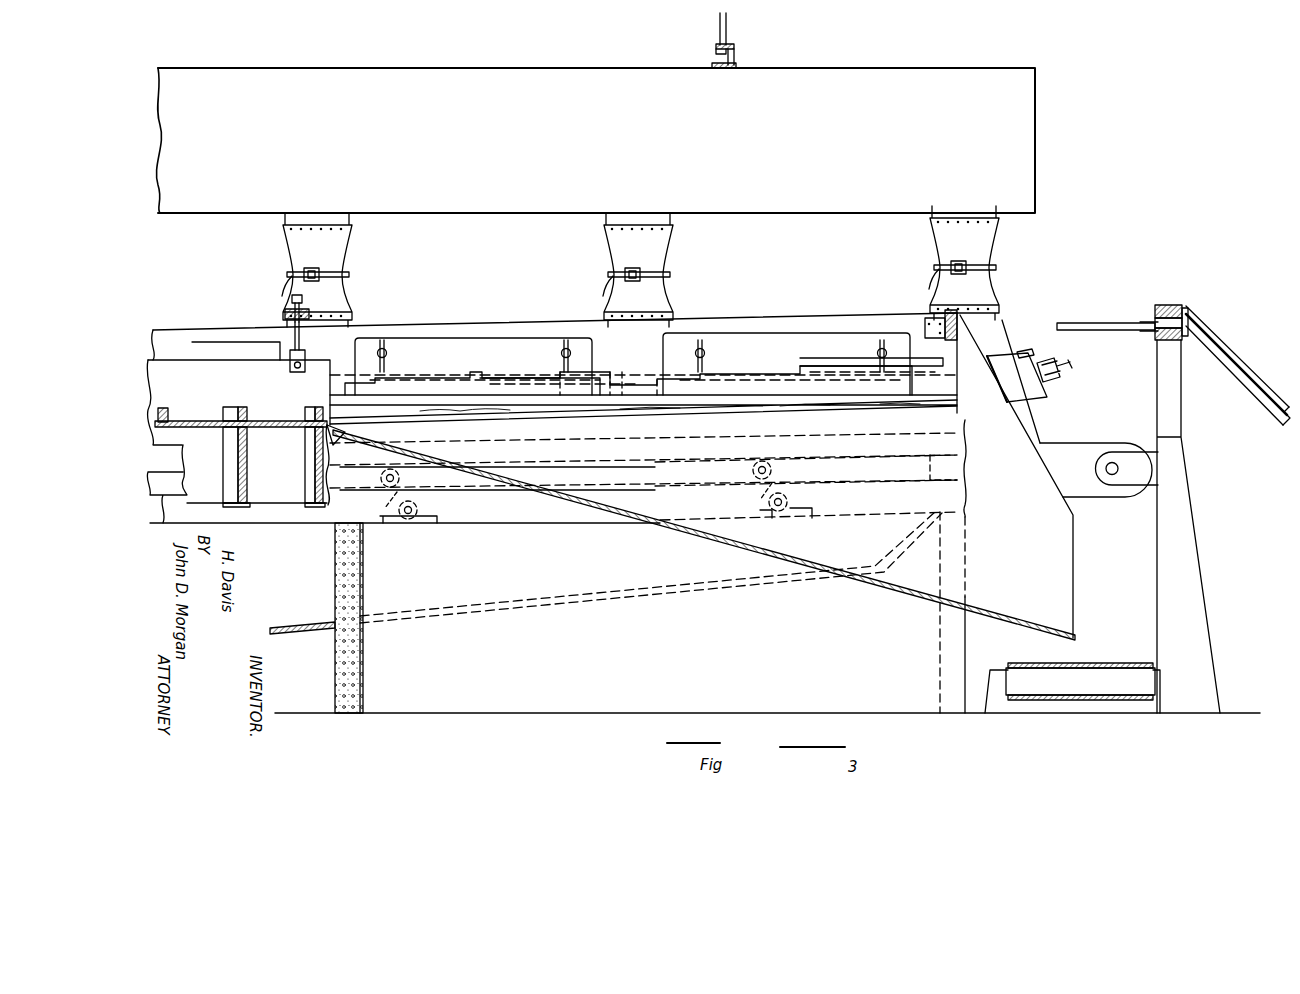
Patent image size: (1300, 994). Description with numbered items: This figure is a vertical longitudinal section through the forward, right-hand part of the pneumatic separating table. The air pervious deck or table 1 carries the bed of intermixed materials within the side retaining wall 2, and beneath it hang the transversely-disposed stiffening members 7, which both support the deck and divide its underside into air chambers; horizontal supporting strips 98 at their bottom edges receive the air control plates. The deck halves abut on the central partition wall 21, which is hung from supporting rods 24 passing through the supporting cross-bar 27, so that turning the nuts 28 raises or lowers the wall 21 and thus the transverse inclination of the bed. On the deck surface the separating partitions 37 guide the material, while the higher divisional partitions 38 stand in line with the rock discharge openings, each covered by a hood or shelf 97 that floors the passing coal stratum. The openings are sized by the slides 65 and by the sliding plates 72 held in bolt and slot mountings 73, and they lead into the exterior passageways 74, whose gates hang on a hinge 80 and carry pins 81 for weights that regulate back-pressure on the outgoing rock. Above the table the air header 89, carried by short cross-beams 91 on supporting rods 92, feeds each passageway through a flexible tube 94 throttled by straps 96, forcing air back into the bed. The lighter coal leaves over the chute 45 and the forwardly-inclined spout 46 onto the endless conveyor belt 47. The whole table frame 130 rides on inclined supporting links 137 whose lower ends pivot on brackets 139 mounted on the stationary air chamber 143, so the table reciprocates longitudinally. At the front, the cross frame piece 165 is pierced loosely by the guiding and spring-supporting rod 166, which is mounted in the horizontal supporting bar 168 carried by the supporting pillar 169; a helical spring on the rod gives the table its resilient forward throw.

The air pervious deck or table 1 is at (268, 430).
The side retaining wall 2 is at (234, 325).
The stiffening members 7 is at (305, 464).
The partition wall 21 is at (170, 345).
The supporting rods 24 is at (302, 333).
The supporting cross-bar 27 is at (290, 318).
The nuts 28 is at (300, 306).
The separating partitions 37 is at (243, 410).
The divisional partitions 38 is at (486, 376).
The chute 45 is at (858, 597).
The spout 46 is at (1065, 602).
The endless conveyor belt 47 is at (1117, 664).
The slides 65 is at (437, 382).
The sliding plates 72 is at (195, 345).
The bolt and slot mountings 73 is at (386, 348).
The passageways 74 is at (1028, 401).
The hinge 80 is at (1040, 351).
The pins 81 is at (1072, 367).
The header 89 is at (608, 67).
The cross-beams 91 is at (736, 58).
The supporting rods 92 is at (728, 28).
The flexible tube 94 is at (350, 248).
The straps 96 is at (350, 274).
The hood or shelf 97 is at (536, 376).
The supporting strips 98 is at (250, 507).
The frame 130 is at (480, 482).
The supporting links 137 is at (390, 487).
The brackets 139 is at (420, 512).
The air chamber 143 is at (340, 565).
The cross frame piece 165 is at (960, 320).
The guiding and spring-supporting rod 166 is at (1115, 300).
The supporting bar 168 is at (1168, 305).
The supporting pillar 169 is at (1164, 438).